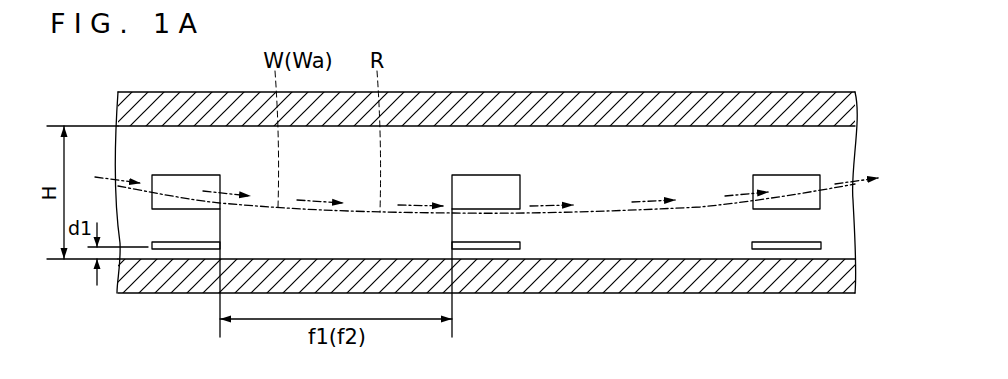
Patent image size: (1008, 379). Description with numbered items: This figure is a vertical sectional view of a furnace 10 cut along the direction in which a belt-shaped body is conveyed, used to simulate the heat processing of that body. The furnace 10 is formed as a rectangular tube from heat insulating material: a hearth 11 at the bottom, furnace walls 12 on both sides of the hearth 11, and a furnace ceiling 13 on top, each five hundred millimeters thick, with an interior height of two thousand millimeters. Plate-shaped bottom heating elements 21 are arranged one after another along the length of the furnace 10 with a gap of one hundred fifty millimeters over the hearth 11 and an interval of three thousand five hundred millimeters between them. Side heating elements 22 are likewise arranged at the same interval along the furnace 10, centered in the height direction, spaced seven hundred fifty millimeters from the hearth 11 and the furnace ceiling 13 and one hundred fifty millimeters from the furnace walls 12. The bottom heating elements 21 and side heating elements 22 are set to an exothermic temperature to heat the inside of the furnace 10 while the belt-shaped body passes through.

The furnace 10 is at (486, 180).
The hearth 11 is at (677, 276).
The furnace walls 12 is at (607, 150).
The furnace ceiling 13 is at (680, 106).
The bottom heating elements 21 is at (183, 250).
The side heating elements 22 is at (187, 175).